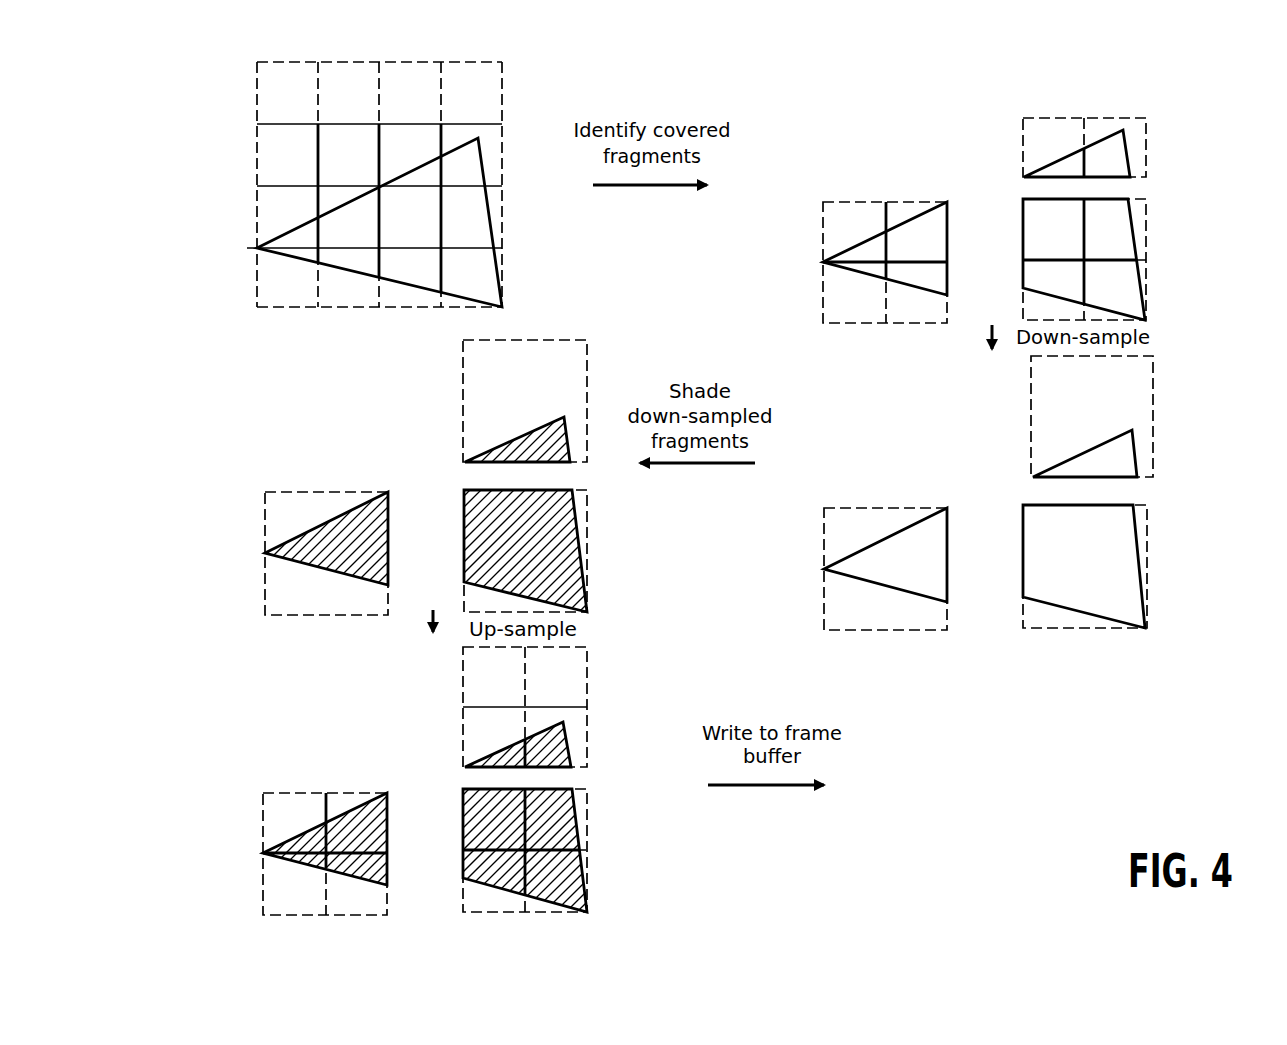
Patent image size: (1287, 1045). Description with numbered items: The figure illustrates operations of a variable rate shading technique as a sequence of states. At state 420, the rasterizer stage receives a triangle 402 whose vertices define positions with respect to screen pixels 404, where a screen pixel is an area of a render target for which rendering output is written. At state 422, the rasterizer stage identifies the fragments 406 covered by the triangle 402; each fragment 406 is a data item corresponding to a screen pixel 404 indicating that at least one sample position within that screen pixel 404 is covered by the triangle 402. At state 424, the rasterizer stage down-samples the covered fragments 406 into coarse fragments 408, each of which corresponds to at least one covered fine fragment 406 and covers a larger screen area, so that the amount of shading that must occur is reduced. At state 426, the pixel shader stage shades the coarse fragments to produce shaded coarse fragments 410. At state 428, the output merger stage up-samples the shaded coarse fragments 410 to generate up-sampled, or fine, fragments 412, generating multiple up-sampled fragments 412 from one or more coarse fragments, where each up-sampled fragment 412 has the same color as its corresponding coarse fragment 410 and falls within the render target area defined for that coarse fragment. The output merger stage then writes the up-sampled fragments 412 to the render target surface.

The triangle 402 is at (463, 210).
The screen pixels 404 is at (482, 62).
The fragments 406 is at (1108, 118).
The coarse fragments 408 is at (1030, 397).
The shaded coarse fragments 410 is at (463, 412).
The up-sampled fragments 412 is at (463, 733).
The state 420 is at (381, 168).
The state 422 is at (1037, 205).
The state 424 is at (1007, 491).
The state 426 is at (437, 460).
The state 428 is at (434, 772).